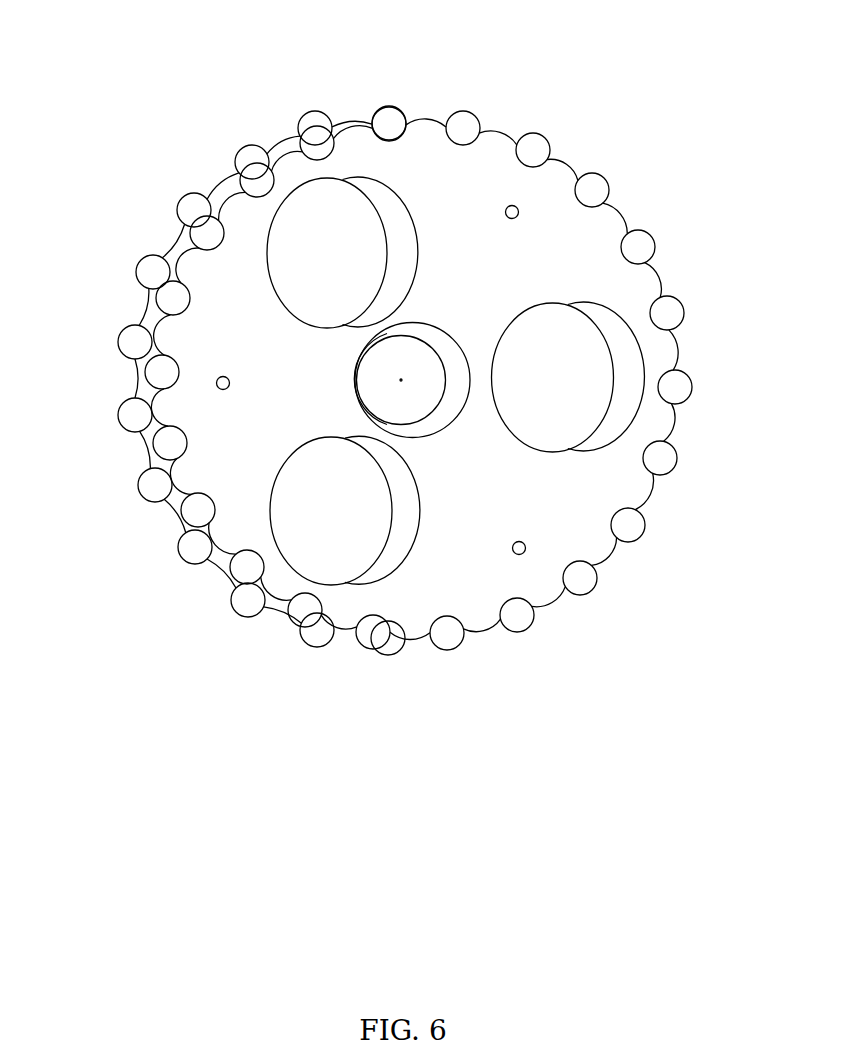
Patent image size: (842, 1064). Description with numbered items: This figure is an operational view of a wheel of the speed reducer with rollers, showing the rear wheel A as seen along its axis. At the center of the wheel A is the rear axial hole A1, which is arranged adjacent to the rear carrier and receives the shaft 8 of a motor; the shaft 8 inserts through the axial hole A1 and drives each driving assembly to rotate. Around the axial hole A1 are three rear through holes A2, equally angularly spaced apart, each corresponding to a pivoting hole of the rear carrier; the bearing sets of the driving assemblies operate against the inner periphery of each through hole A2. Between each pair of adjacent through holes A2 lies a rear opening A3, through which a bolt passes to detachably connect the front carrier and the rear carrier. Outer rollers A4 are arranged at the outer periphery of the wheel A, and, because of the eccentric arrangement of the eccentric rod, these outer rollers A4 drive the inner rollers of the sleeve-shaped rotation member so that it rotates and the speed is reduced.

The rear wheel A is at (568, 163).
The rear axial hole A1 is at (452, 360).
The rear through holes A2 is at (333, 240).
The rear openings A3 is at (519, 554).
The outer rollers A4 is at (256, 176).
The shaft 8 is at (400, 380).